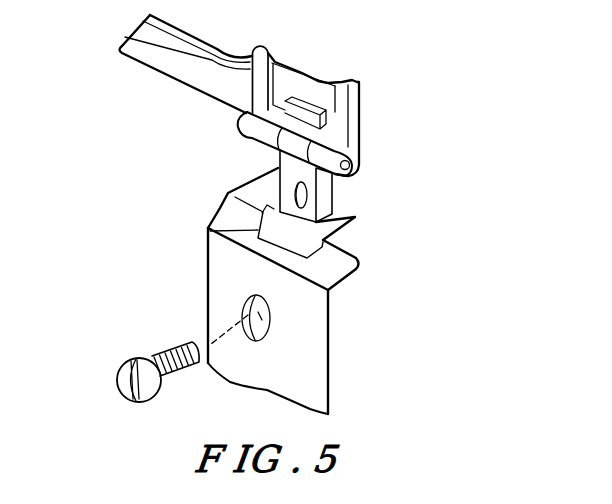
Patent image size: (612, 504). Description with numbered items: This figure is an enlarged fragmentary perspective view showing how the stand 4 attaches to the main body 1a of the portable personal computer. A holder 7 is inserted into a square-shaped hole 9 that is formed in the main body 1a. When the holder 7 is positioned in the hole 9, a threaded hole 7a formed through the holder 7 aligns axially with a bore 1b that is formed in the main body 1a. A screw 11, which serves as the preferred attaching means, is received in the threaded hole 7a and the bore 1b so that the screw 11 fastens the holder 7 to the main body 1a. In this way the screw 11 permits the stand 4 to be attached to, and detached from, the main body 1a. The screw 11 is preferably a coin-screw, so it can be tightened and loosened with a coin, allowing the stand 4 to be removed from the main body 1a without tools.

The stand 4 is at (186, 56).
The holder 7 is at (321, 204).
The threaded hole 7a is at (257, 181).
The main body 1a is at (239, 284).
The bore 1b is at (216, 319).
The square-shaped hole 9 is at (220, 233).
The screw 11 is at (128, 374).